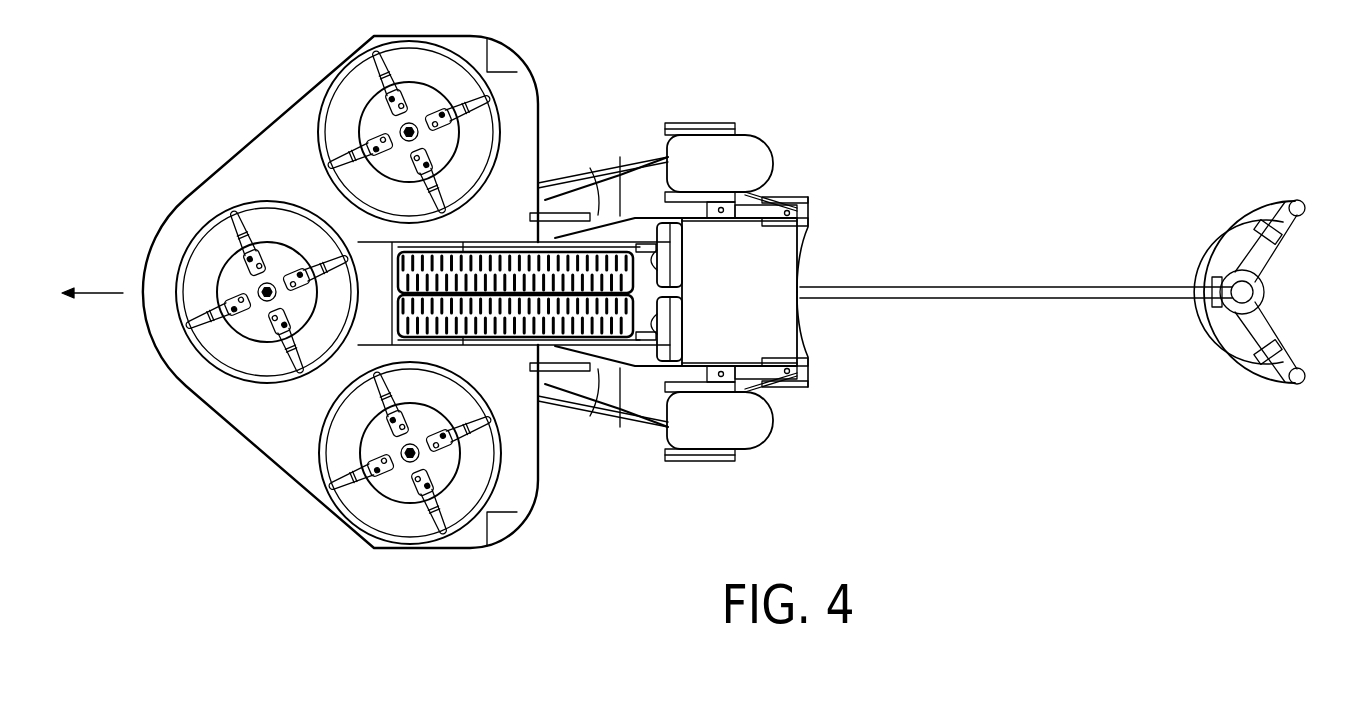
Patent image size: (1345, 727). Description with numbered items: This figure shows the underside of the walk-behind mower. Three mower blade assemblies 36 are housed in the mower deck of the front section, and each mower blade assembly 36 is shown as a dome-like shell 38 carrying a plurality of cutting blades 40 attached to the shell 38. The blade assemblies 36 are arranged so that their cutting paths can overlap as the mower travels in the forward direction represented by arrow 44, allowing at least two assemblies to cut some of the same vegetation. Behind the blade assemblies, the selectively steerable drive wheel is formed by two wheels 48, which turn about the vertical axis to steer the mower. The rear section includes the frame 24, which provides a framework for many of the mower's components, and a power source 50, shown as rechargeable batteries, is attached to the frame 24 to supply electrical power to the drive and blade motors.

The frame 24 is at (610, 192).
The mower blade assembly 36 is at (303, 127).
The dome-like shell 38 is at (330, 87).
The cutting blades 40 is at (360, 177).
The arrow 44 is at (103, 293).
The wheels 48 is at (484, 251).
The power source 50 is at (648, 258).